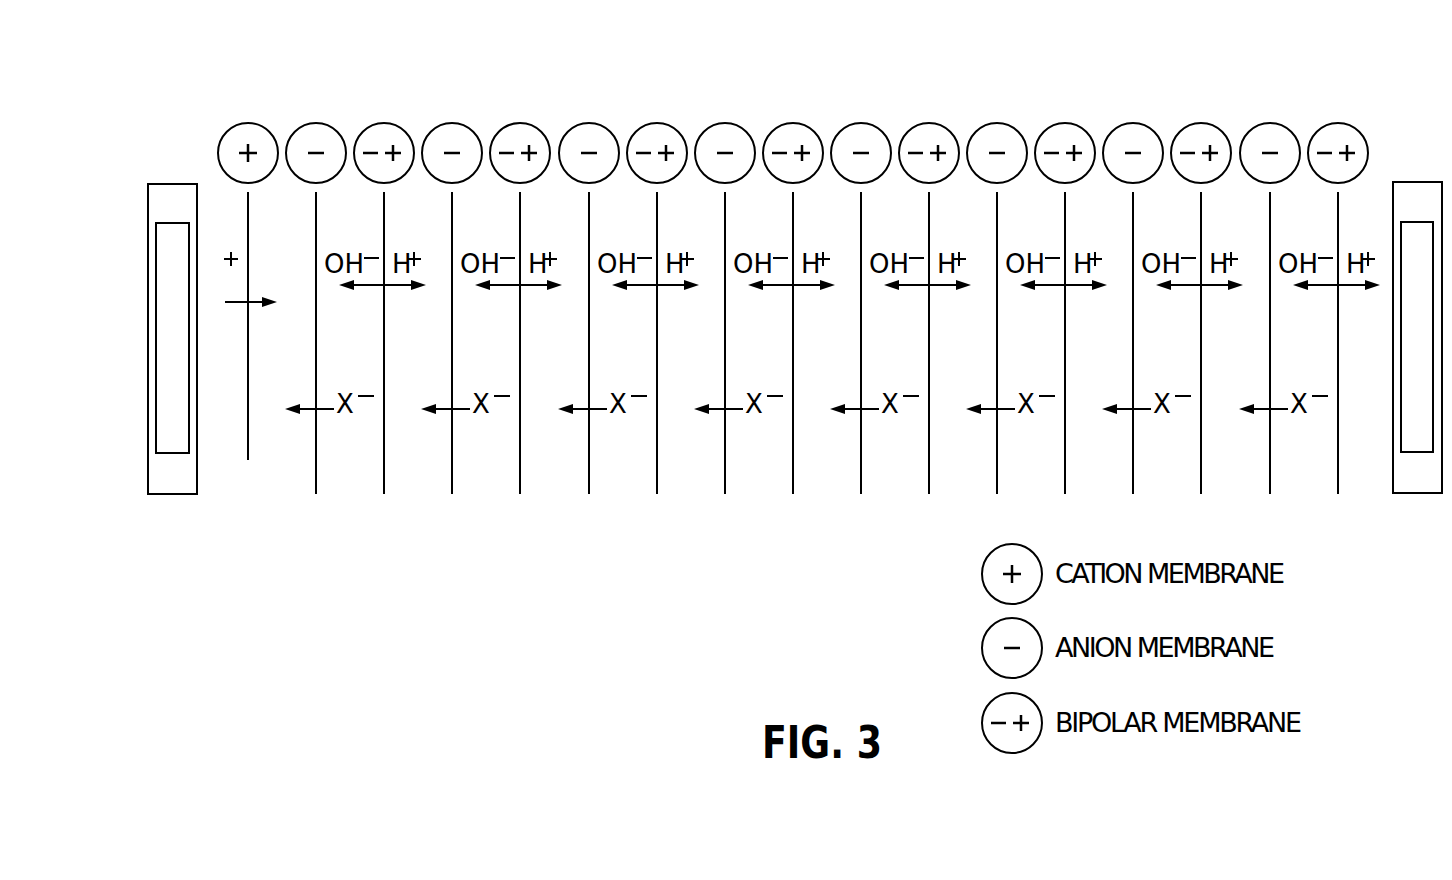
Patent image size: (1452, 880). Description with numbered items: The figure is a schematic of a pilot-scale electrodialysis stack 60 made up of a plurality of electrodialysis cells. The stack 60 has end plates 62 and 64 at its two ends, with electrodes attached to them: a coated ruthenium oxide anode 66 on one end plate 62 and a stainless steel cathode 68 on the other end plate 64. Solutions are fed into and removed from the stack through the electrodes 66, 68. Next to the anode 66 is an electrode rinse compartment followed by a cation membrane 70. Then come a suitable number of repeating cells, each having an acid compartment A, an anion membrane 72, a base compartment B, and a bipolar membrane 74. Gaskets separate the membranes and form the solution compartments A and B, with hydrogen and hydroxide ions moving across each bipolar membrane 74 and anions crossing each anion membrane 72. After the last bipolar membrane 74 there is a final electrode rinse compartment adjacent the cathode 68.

The electrodialysis stack 60 is at (1282, 100).
The end plate 62 is at (184, 184).
The end plate 64 is at (1412, 182).
The anode 66 is at (170, 453).
The cathode 68 is at (1422, 452).
The cation membrane 70 is at (248, 247).
The anion membrane 72 is at (316, 243).
The bipolar membrane 74 is at (384, 245).